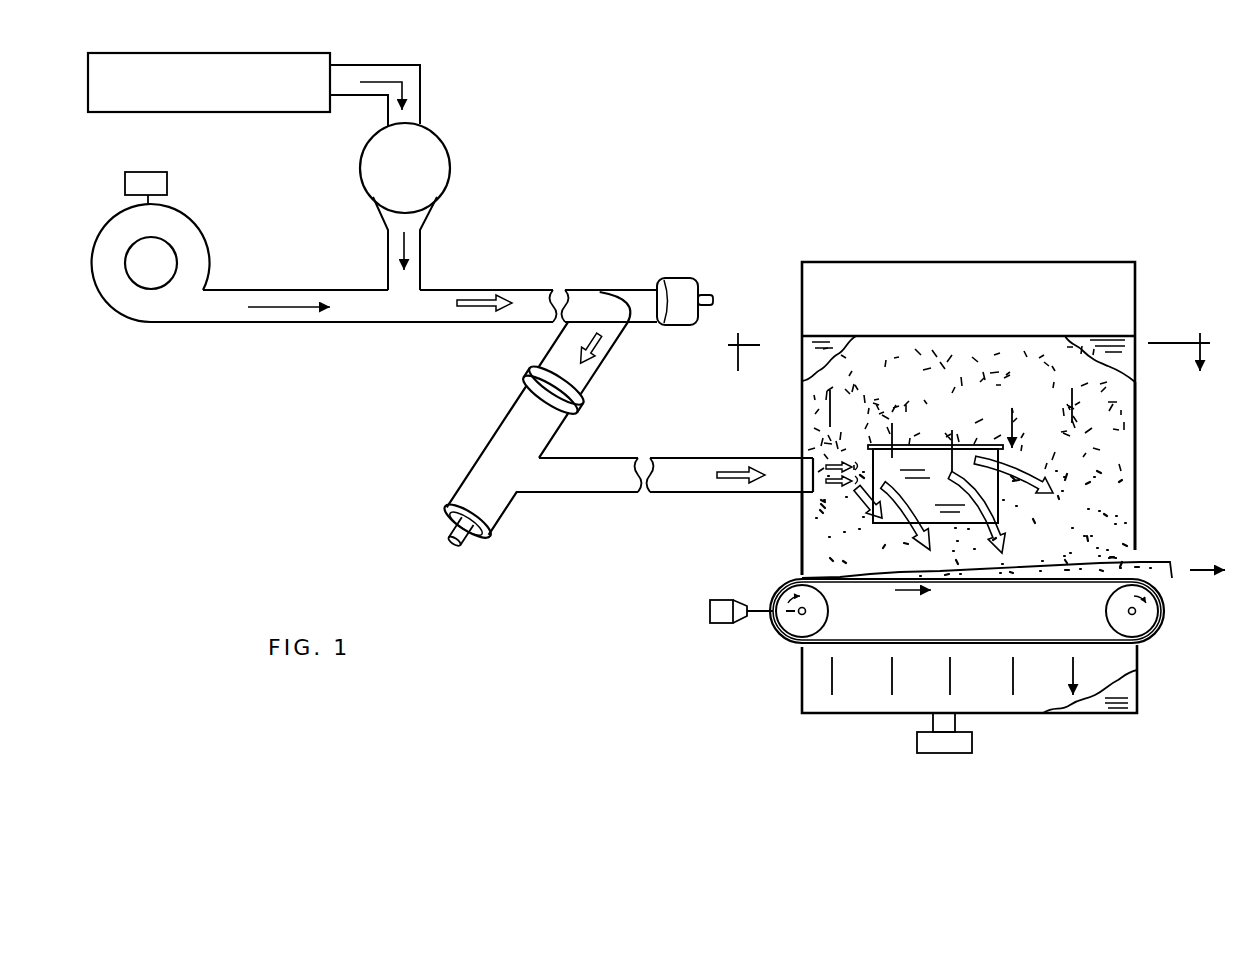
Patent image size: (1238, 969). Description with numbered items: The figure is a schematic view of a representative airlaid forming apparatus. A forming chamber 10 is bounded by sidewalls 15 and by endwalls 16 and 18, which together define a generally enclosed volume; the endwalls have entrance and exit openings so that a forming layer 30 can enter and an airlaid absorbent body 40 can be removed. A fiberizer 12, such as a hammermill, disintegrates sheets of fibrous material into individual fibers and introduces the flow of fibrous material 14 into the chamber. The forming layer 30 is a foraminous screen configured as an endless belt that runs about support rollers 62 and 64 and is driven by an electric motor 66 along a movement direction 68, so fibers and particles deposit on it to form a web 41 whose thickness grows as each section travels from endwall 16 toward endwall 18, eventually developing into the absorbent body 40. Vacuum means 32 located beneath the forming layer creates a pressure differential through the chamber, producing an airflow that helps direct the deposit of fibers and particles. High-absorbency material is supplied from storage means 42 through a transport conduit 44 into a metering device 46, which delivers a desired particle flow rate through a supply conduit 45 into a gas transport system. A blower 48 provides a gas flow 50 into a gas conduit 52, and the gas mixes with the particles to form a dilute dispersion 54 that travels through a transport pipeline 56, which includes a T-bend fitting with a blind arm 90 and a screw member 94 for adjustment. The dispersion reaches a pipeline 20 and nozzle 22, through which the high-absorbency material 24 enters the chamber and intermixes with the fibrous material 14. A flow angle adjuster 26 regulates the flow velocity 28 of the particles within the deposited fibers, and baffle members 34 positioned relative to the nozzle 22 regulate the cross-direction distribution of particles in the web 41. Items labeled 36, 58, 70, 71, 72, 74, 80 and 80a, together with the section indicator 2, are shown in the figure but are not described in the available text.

The forming chamber 10 is at (1148, 420).
The fiberizer 12 is at (1057, 262).
The fibrous material 14 is at (947, 377).
The sidewalls 15 is at (1130, 347).
The endwall 16 is at (800, 562).
The endwall 18 is at (1140, 515).
The pipeline 20 is at (742, 493).
The nozzle 22 is at (810, 494).
The high-absorbency material 24 is at (830, 448).
The flow angle adjuster 26 is at (590, 413).
The flow velocity 28 is at (850, 462).
The forming layer 30 is at (1033, 582).
The vacuum means 32 is at (972, 748).
The baffle members 34 is at (877, 527).
The air flow arrows 36 is at (827, 402).
The airlaid absorbent body 40 is at (1158, 565).
The web 41 is at (1058, 572).
The storage means 42 is at (245, 53).
The transport conduit 44 is at (422, 95).
The supply conduit 45 is at (422, 270).
The metering device 46 is at (452, 155).
The blower 48 is at (208, 238).
The gas flow 50 is at (280, 310).
The gas conduit 52 is at (302, 288).
The dispersion 54 is at (478, 312).
The transport pipeline 56 is at (608, 357).
The motor 58 is at (167, 183).
The support roller 62 is at (828, 602).
The support roller 64 is at (1158, 623).
The electric motor 66 is at (710, 613).
The movement direction 68 is at (907, 592).
The distributor box 70 is at (1037, 482).
The flow arrow 71 is at (873, 510).
The flow arrow 72 is at (1000, 535).
The distributor top plate 74 is at (1000, 446).
The spray head 80 is at (683, 276).
The second spray head 80a is at (495, 533).
The blind arm 90 is at (488, 473).
The screw member 94 is at (717, 297).
The section line 2- 2 is at (969, 375).